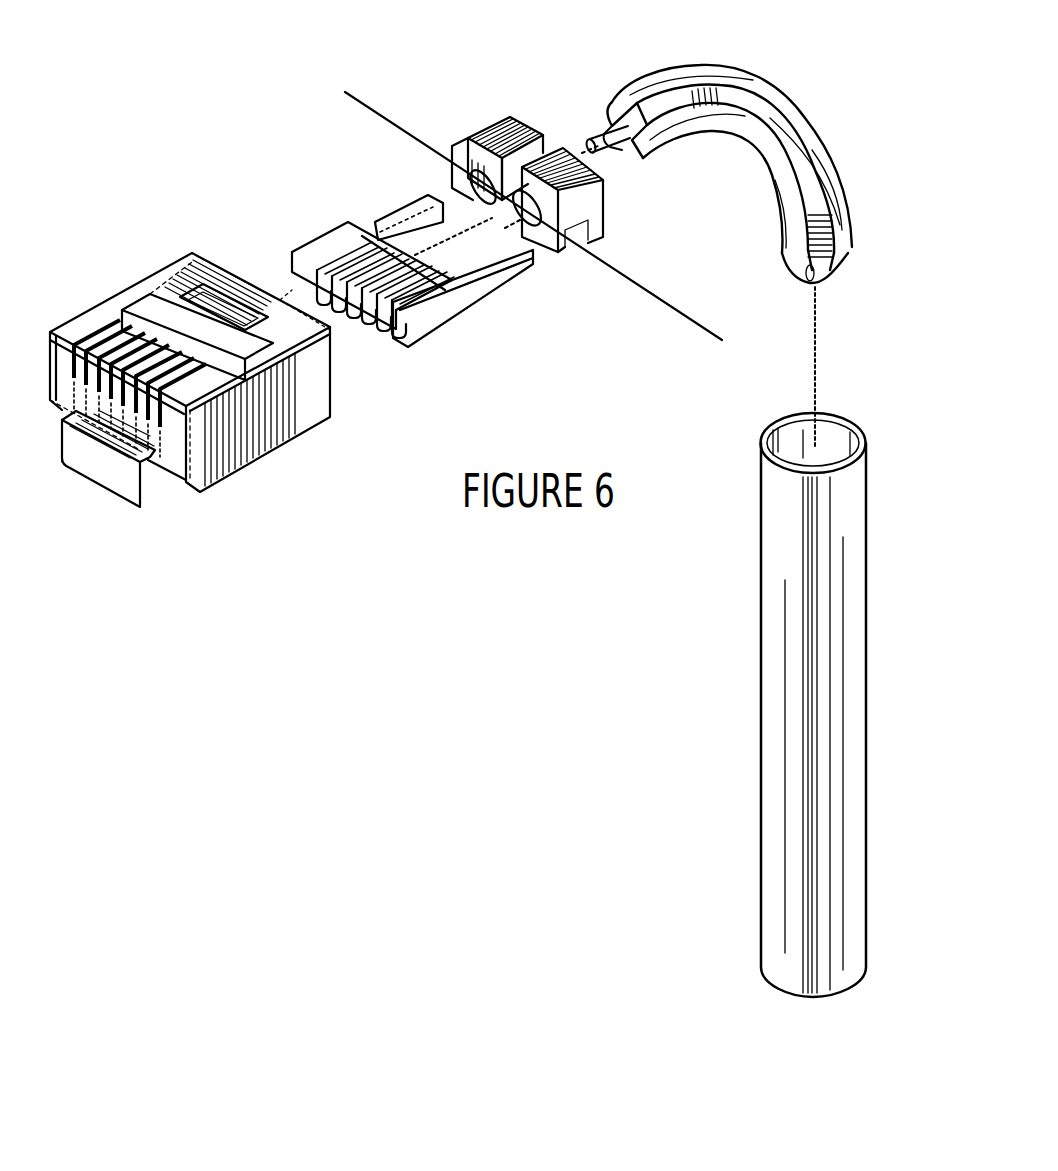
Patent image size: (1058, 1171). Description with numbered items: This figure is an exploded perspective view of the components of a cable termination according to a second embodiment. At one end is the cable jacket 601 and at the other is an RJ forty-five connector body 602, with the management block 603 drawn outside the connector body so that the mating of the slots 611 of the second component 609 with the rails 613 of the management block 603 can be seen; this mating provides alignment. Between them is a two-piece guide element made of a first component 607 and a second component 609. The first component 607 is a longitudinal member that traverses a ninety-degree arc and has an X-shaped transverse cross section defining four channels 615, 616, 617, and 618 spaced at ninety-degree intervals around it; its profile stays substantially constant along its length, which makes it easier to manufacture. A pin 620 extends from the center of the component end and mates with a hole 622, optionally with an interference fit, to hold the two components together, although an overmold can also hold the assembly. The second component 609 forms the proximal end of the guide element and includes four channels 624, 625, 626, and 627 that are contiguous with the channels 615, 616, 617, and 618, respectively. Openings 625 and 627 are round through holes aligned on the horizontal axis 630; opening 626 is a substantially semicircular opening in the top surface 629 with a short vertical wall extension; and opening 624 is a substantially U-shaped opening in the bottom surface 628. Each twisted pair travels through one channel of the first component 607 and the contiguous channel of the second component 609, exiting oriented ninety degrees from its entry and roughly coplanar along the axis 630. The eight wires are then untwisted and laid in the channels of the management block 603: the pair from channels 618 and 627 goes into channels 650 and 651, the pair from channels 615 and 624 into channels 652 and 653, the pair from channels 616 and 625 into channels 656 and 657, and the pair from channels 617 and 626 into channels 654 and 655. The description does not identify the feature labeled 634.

The cable jacket 601 is at (795, 642).
The RJ 45 connector body 602 is at (190, 371).
The management block 603 is at (392, 282).
The first component 607 is at (681, 152).
The second component 609 is at (489, 134).
The slots 611 is at (528, 211).
The rails 613 is at (455, 242).
The channel 615 is at (803, 260).
The channel 616 is at (861, 194).
The channel 617 is at (678, 72).
The channel 618 is at (602, 105).
The pin 620 is at (626, 160).
The hole 622 is at (453, 246).
The channel (opening) 624 is at (490, 237).
The channel (opening) 625 is at (627, 219).
The channel (opening) 626 is at (531, 143).
The channel (opening) 627 is at (459, 162).
The bottom surface 628 is at (553, 247).
The top surface 629 is at (562, 149).
The horizontal axis 630 is at (533, 225).
The side surface 634 is at (585, 209).
The channel of management element 650 is at (362, 296).
The channel of management element 651 is at (282, 277).
The channel of management element 652 is at (351, 326).
The channel of management element 653 is at (387, 351).
The channel of management element 654 is at (331, 254).
The channel of management element 655 is at (356, 254).
The channel of management element 656 is at (443, 326).
The channel of management element 657 is at (419, 344).